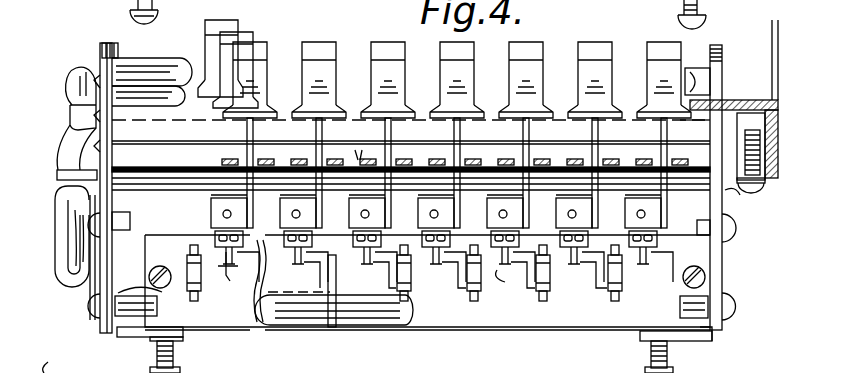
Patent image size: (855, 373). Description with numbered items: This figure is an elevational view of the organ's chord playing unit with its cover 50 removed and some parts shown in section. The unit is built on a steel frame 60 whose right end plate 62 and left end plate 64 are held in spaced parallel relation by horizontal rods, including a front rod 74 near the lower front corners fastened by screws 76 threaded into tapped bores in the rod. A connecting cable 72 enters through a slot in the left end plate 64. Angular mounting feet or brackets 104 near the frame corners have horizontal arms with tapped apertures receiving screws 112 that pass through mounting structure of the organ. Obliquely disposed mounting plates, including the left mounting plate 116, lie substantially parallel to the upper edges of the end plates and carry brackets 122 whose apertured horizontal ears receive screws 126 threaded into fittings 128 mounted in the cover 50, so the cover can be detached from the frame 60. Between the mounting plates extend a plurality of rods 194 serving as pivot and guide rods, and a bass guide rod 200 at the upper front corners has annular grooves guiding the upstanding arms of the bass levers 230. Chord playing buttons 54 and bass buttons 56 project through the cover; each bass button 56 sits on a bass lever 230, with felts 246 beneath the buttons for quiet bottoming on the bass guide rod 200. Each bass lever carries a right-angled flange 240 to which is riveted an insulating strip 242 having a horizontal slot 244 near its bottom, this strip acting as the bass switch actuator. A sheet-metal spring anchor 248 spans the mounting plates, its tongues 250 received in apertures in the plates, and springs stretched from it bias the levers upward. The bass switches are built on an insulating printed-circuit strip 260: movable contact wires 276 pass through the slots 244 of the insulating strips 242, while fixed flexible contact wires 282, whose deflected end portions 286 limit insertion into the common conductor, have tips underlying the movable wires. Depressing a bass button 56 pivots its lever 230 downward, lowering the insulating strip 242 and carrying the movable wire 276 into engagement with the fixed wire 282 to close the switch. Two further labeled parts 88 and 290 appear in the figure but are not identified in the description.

The cover 50 is at (786, 12).
The chord playing buttons 54 is at (248, 32).
The bass buttons 56 is at (268, 54).
The frame 60 is at (730, 284).
The right end plate 62 is at (720, 252).
The left end plate 64 is at (118, 252).
The connecting cable 72 is at (68, 246).
The front rod 74 is at (722, 330).
The screws 76 is at (92, 308).
The base plate 88 is at (560, 364).
The mounting feet or brackets 104 is at (120, 337).
The screws 112 is at (126, 2).
The left mounting plate 116 is at (764, 364).
The brackets 122 is at (72, 143).
The screws 126 is at (737, 198).
The threaded fittings 128 is at (772, 162).
The rods 194 is at (160, 80).
The bass guide rod 200 is at (412, 272).
The bass levers 230 is at (532, 160).
The flange 240 is at (486, 220).
The insulating strip 242 is at (557, 174).
The horizontal slot 244 is at (517, 258).
The felts 246 is at (374, 160).
The spring anchor 248 is at (158, 190).
The tongues 250 is at (717, 174).
The insulating panel or strip 260 is at (621, 322).
The movable switch contact wires 276 is at (224, 280).
The fixed contact wires 282 is at (400, 292).
The deflected end portions 286 is at (372, 285).
The clamp 290 is at (623, 6).